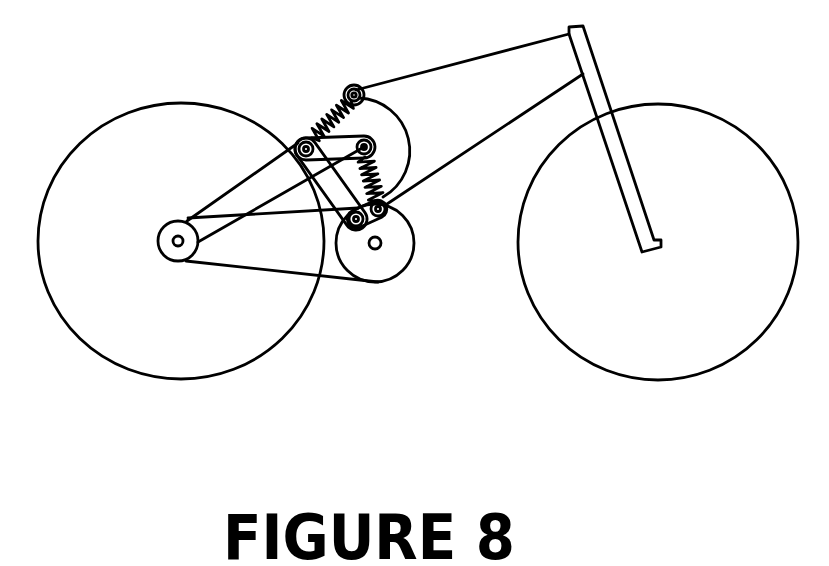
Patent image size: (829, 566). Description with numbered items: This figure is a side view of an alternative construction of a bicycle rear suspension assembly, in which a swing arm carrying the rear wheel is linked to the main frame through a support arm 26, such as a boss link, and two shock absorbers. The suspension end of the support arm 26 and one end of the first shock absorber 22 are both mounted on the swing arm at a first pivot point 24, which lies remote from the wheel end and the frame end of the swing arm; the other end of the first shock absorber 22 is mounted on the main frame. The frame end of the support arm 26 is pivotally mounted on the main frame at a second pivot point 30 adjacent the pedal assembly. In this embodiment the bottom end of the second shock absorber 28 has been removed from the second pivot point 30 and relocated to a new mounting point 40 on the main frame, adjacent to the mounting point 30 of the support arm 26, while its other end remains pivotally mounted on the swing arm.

The first shock absorber 22 is at (323, 105).
The first pivot point 24 is at (297, 143).
The support arm 26 is at (318, 178).
The second shock absorber 28 is at (378, 160).
The second pivot point 30 is at (357, 225).
The mounting point 40 is at (383, 213).